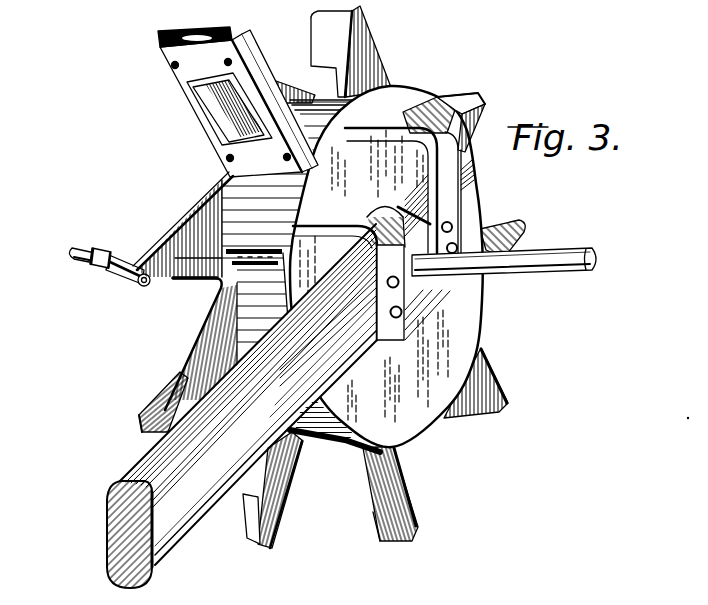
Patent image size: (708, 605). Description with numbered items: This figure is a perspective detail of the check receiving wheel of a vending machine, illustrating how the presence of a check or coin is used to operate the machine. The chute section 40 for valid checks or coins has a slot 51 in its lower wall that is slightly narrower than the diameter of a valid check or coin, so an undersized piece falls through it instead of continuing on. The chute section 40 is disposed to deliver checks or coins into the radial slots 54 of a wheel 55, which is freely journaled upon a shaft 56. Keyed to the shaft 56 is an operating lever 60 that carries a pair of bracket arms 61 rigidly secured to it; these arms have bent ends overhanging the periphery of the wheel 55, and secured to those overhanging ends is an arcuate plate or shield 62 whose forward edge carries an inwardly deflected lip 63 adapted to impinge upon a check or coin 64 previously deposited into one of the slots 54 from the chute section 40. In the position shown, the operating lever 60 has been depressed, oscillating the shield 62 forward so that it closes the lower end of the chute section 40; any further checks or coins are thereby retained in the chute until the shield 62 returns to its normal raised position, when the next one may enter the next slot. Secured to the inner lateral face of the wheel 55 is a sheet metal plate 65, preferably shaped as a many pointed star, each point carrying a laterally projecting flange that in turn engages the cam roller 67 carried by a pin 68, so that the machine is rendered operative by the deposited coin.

The chute section 40 is at (223, 92).
The slot 51 is at (220, 109).
The radial slots 54 is at (302, 447).
The wheel 55 is at (472, 312).
The shaft 56 is at (552, 250).
The operating lever 60 is at (184, 532).
The bracket arms 61 is at (365, 138).
The arcuate plate or shield 62 is at (240, 207).
The inwardly deflected lip 63 is at (232, 250).
The check or coin 64 is at (222, 281).
The sheet metal plate 65 is at (190, 368).
The cam roller 67 is at (97, 267).
The pin 68 is at (72, 253).